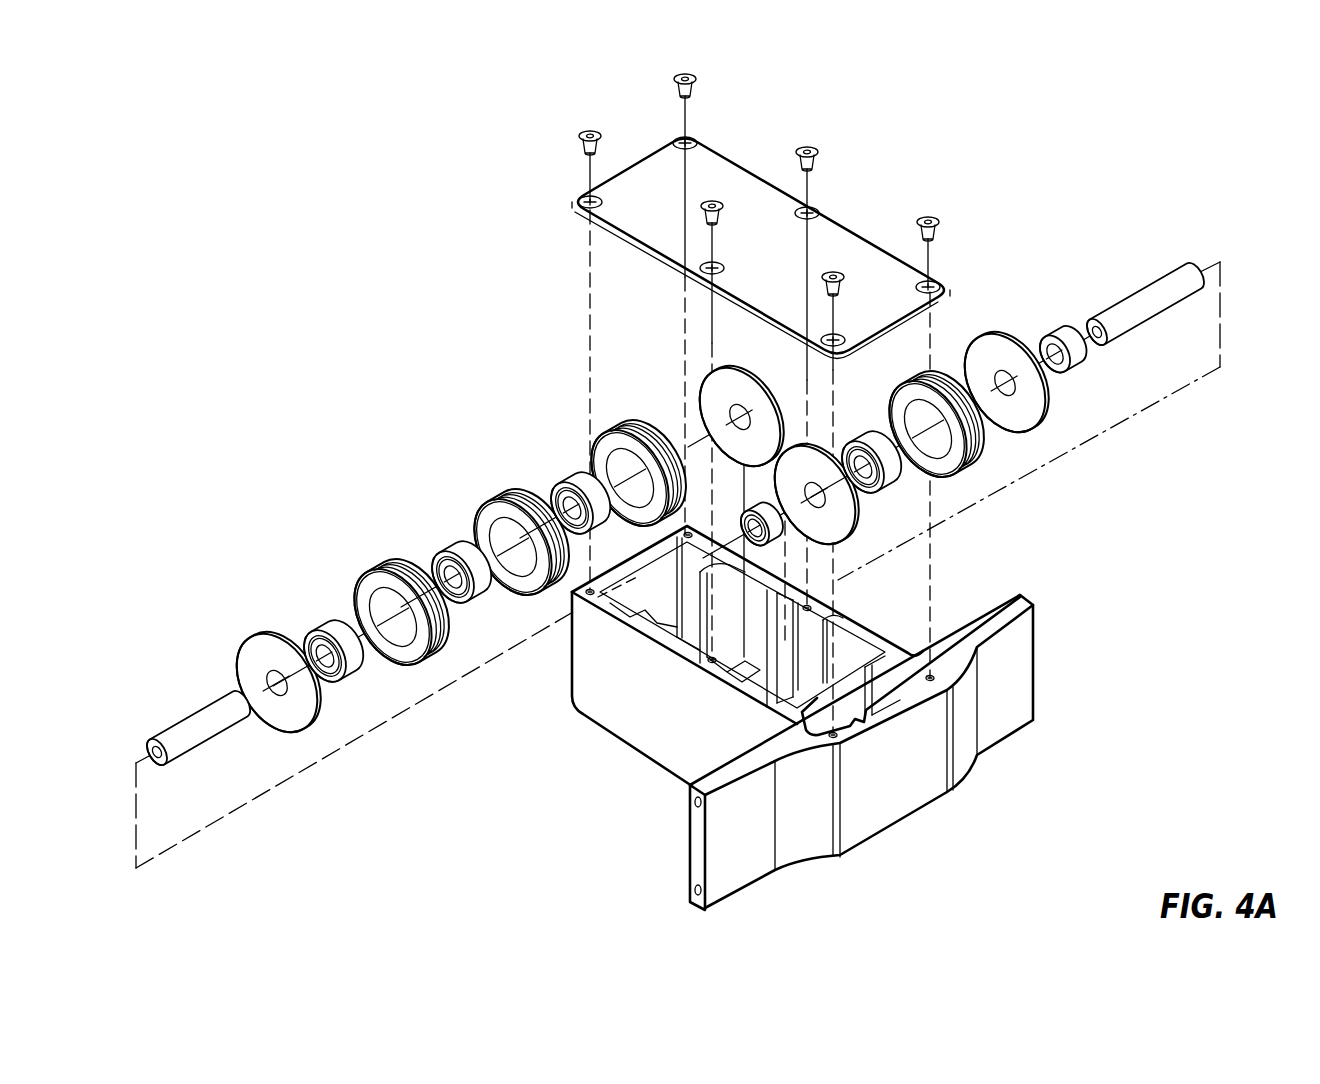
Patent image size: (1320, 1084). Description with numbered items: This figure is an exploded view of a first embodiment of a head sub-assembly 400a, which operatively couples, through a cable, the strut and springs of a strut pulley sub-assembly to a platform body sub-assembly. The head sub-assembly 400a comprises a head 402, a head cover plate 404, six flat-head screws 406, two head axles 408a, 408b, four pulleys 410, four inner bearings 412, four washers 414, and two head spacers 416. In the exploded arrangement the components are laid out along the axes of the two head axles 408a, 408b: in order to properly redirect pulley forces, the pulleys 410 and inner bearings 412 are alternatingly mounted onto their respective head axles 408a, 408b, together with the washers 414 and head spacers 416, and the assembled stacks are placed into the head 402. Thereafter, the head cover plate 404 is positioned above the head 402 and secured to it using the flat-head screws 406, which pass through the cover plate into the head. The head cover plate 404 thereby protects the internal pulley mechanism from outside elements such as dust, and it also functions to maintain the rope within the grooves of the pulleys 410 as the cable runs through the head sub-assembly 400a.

The head sub-assembly 400a is at (678, 492).
The head 402 is at (1016, 735).
The head cover plate 404 is at (739, 156).
The flat-head screws 406 is at (582, 137).
The head axle 408a is at (153, 735).
The head axle 408b is at (1151, 279).
The pulleys 410 is at (371, 560).
The inner bearings 412 is at (322, 618).
The washers 414 is at (252, 632).
The head spacers 416 is at (1056, 326).